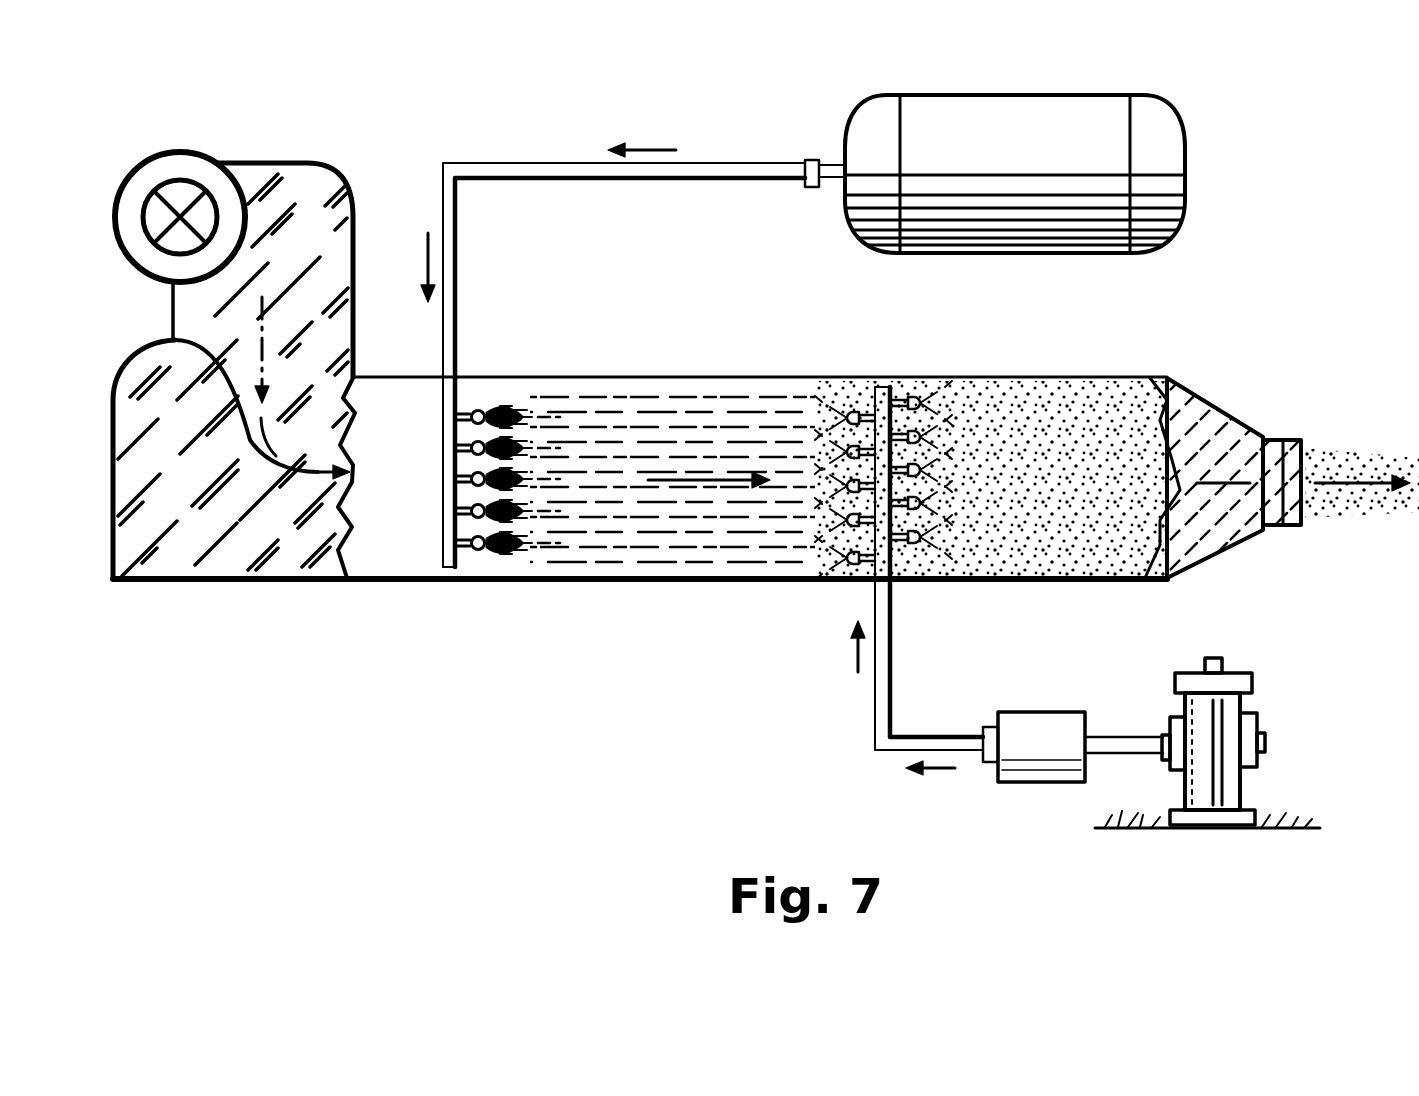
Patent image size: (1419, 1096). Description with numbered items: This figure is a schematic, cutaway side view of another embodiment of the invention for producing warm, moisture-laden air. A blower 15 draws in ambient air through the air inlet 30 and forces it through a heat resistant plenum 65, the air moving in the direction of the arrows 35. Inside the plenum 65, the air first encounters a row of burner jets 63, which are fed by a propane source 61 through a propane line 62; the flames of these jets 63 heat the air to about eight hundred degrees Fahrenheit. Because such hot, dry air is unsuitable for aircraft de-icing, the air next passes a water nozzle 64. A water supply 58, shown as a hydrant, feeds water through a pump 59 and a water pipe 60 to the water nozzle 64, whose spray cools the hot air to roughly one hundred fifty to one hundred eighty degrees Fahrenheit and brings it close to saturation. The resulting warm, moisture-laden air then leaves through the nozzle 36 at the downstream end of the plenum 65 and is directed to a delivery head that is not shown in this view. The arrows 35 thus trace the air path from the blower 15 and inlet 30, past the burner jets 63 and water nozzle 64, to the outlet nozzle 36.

The blower 15 is at (186, 153).
The air inlet 30 is at (305, 180).
The arrows 35 is at (260, 366).
The nozzle 36 is at (1300, 440).
The water supply 58 is at (1243, 787).
The pump 59 is at (1057, 710).
The water pipe 60 is at (940, 743).
The propane source 61 is at (1117, 95).
The propane line 62 is at (440, 215).
The burner jets 63 is at (447, 487).
The water nozzle 64 is at (848, 420).
The heat resistant plenum 65 is at (1165, 378).